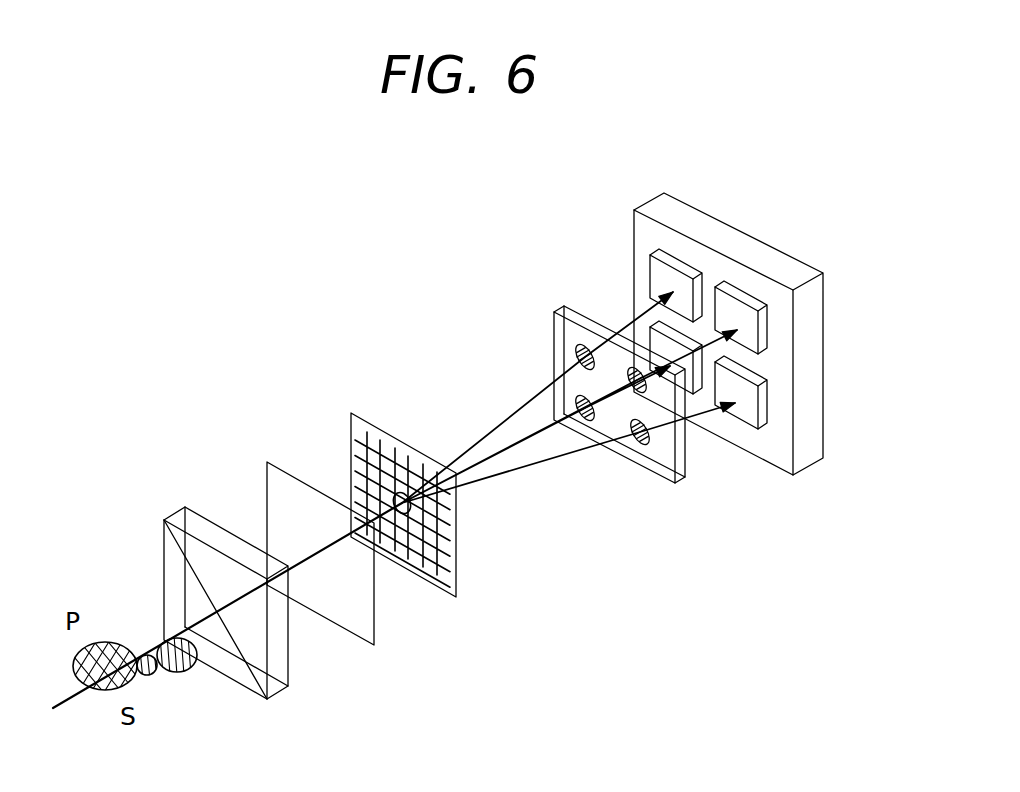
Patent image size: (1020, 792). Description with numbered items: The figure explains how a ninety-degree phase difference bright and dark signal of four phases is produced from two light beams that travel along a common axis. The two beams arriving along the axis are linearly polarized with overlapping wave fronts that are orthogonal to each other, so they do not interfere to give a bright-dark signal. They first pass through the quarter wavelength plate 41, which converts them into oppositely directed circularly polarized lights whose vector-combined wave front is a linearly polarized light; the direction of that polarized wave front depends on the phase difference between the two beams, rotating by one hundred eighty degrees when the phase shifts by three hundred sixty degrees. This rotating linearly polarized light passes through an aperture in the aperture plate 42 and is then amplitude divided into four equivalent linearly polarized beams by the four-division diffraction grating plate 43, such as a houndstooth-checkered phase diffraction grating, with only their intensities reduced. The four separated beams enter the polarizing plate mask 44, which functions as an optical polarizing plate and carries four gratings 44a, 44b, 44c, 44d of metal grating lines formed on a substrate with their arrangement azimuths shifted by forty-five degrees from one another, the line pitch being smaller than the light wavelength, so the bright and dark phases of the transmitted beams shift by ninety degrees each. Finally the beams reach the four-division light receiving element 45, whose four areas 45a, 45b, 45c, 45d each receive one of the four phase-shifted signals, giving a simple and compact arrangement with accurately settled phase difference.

The quarter wavelength plate 41 is at (163, 540).
The aperture plate 42 is at (277, 477).
The four-division diffraction grating plate 43 is at (355, 423).
The polarizing plate mask 44 is at (554, 313).
The grating 44a is at (637, 446).
The grating 44b is at (648, 398).
The grating 44c is at (572, 357).
The grating 44d is at (575, 400).
The four-division light receiving element 45 is at (652, 205).
The light receiving area 45a is at (750, 410).
The light receiving area 45b is at (745, 338).
The light receiving area 45c is at (668, 273).
The light receiving area 45d is at (657, 346).